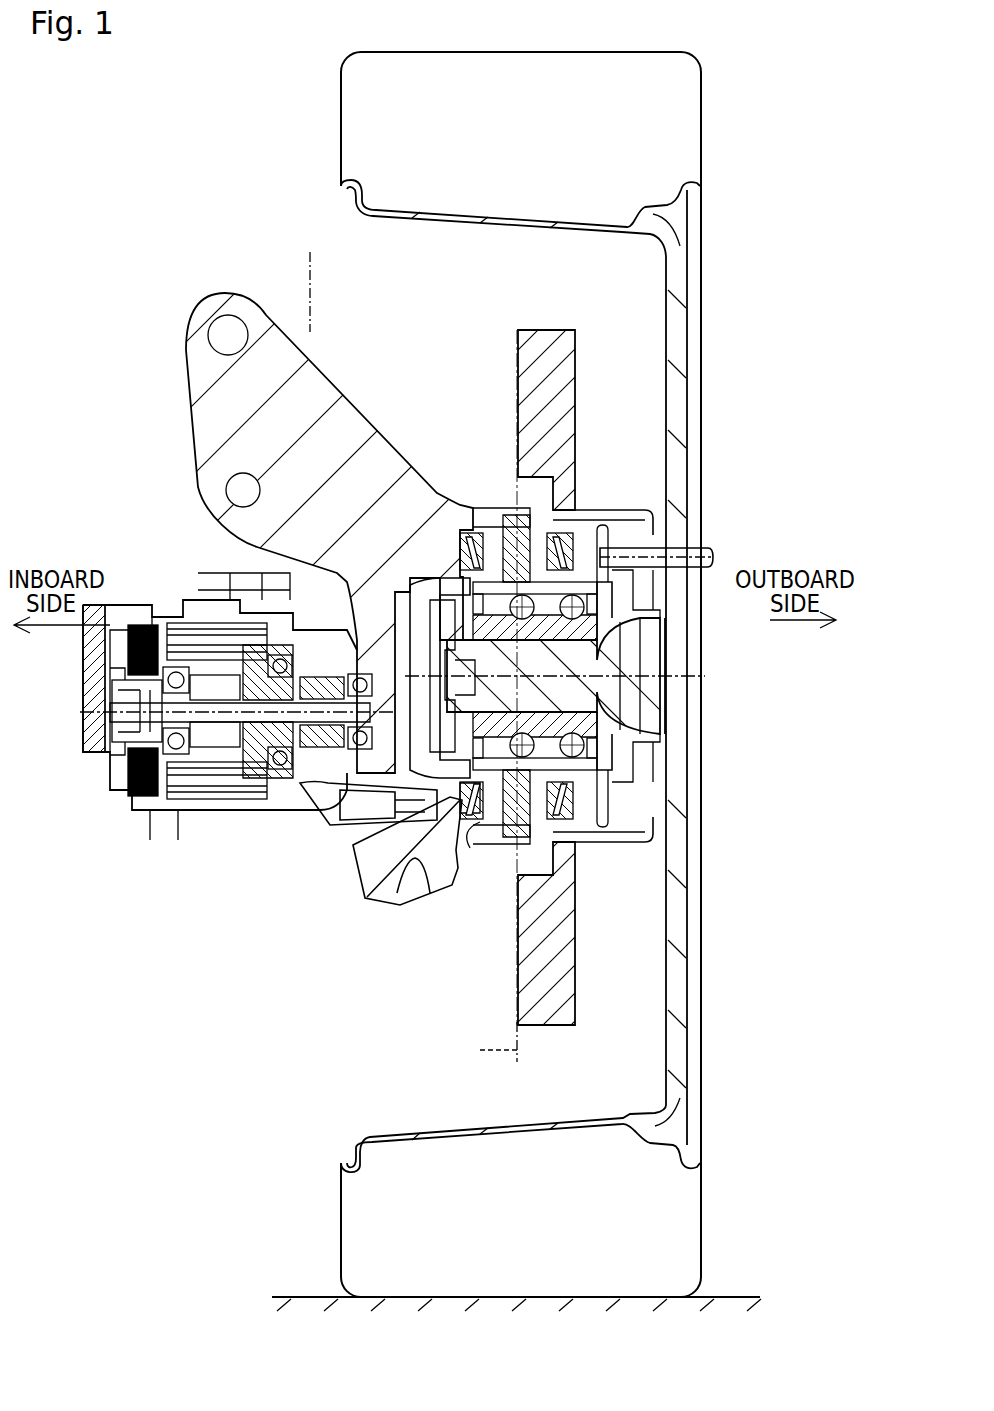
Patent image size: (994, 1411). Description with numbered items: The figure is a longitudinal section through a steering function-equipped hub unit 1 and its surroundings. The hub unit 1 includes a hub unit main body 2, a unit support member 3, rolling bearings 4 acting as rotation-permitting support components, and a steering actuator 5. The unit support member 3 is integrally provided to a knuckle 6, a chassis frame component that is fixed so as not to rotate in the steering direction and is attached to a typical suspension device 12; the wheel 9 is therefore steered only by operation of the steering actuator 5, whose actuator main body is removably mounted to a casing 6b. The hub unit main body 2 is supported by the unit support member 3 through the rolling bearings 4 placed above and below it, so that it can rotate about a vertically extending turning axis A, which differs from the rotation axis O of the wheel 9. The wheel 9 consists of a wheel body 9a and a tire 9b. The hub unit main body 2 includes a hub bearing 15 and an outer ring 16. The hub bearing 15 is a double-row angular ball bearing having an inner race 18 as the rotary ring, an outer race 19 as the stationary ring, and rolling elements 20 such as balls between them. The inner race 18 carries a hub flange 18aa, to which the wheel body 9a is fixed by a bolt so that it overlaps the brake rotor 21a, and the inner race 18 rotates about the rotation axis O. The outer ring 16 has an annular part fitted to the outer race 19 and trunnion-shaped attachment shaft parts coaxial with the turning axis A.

The steering function-equipped hub unit 1 is at (150, 370).
The hub unit main body 2 is at (695, 668).
The unit support member 3 is at (497, 540).
The rolling bearing 4 is at (476, 533).
The steering actuator 5 is at (237, 737).
The knuckle 6 is at (338, 345).
The casing 6b is at (210, 812).
The wheel 9 is at (571, 674).
The wheel body 9a is at (678, 1028).
The tire 9b is at (648, 1200).
The suspension device 12 is at (322, 270).
The hub bearing 15 is at (552, 719).
The outer ring 16 is at (552, 520).
The inner race 18 is at (605, 735).
The hub flange 18aa is at (650, 548).
The outer race 19 is at (615, 760).
The rolling elements 20 is at (610, 745).
The brake rotor 21a is at (645, 815).
The rotation axis O is at (690, 690).
The turning axis A is at (486, 1045).